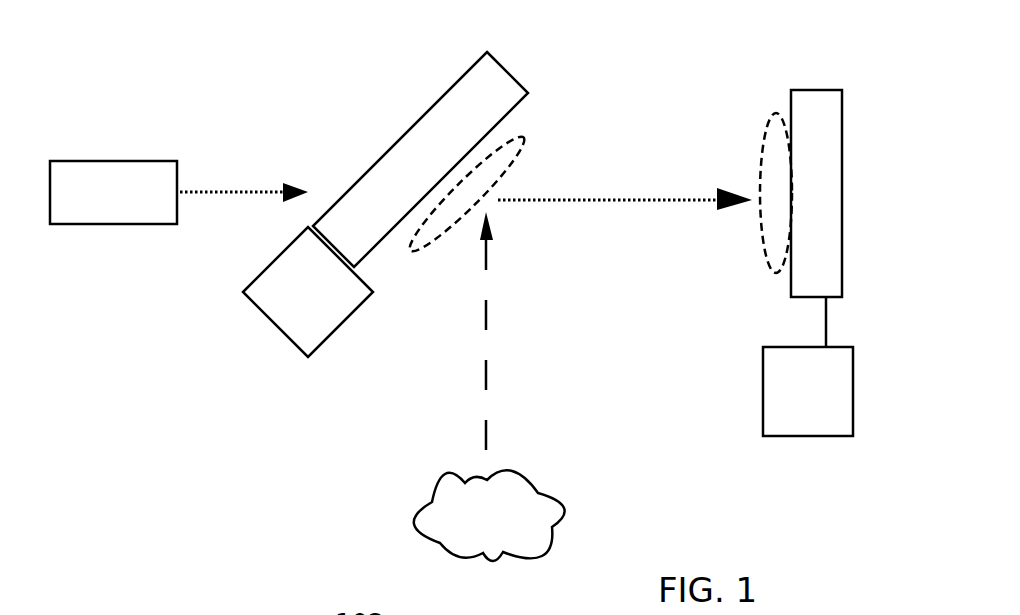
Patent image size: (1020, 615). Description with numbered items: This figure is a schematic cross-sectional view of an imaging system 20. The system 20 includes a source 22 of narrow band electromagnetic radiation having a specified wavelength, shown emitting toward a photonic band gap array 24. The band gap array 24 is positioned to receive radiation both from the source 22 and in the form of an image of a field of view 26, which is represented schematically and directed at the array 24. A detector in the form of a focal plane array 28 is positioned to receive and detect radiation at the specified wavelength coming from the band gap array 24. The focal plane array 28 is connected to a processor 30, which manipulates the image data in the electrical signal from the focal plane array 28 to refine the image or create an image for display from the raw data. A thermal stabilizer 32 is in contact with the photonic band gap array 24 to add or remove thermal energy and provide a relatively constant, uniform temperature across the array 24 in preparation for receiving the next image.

The system 20 is at (200, 127).
The source 22 is at (102, 225).
The photonic band gap array 24 is at (502, 79).
The field of view 26 is at (372, 510).
The focal plane array 28 is at (818, 88).
The processor 30 is at (822, 427).
The thermal stabilizer 32 is at (330, 318).